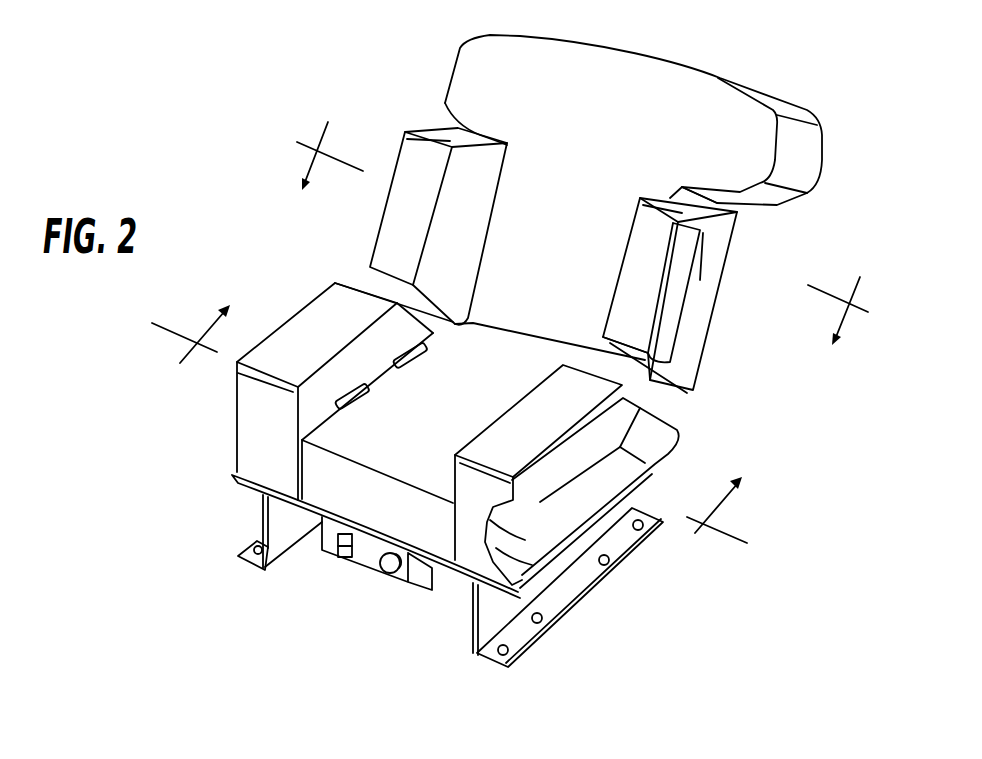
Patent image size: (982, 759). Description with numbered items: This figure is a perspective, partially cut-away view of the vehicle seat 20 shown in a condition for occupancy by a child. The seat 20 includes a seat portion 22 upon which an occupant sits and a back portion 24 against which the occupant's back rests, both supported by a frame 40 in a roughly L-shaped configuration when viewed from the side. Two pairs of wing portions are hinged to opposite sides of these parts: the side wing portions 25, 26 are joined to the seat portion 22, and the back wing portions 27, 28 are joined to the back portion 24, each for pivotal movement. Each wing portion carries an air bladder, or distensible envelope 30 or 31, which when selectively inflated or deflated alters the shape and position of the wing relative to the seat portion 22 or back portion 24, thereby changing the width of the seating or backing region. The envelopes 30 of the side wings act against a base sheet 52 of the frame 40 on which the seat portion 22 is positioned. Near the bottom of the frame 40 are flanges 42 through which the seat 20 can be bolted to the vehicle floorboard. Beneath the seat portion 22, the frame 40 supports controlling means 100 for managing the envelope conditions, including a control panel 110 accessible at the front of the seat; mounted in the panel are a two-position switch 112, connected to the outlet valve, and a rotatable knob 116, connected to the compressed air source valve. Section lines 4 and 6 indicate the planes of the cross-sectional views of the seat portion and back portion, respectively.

The vehicle seat 20 is at (809, 87).
The seat portion 22 is at (458, 420).
The back portion 24 is at (578, 252).
The wing portion 25 is at (287, 347).
The wing portion 26 is at (568, 408).
The wing portion 27 is at (403, 221).
The wing portion 28 is at (692, 295).
The distensible envelope 30 is at (668, 455).
The distensible envelope 31 is at (700, 280).
The frame 40 is at (406, 572).
The flanges 42 is at (257, 548).
The base sheet 52 is at (300, 510).
The controlling means 100 is at (353, 600).
The control panel 110 is at (366, 572).
The two-position switch 112 is at (345, 558).
The rotatable knob 116 is at (390, 577).
The section line 4 is at (449, 439).
The section line 6 is at (588, 222).